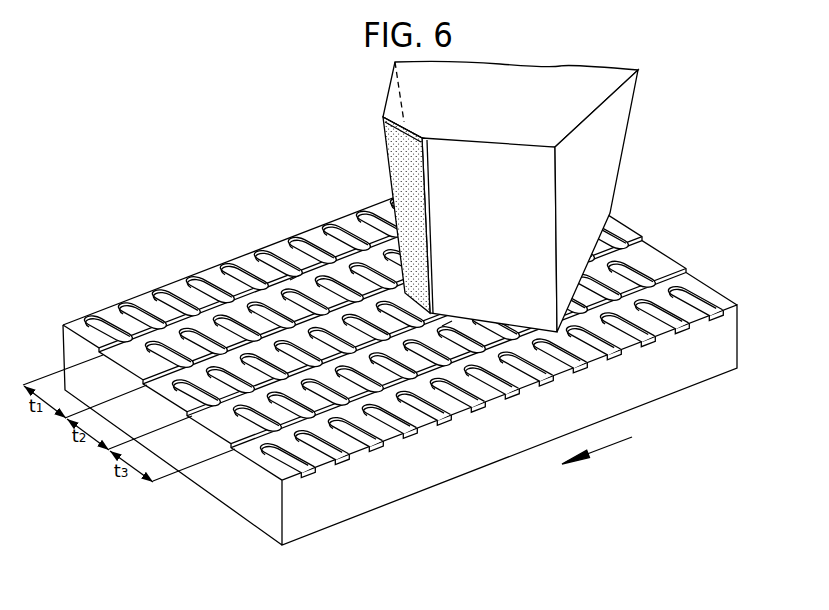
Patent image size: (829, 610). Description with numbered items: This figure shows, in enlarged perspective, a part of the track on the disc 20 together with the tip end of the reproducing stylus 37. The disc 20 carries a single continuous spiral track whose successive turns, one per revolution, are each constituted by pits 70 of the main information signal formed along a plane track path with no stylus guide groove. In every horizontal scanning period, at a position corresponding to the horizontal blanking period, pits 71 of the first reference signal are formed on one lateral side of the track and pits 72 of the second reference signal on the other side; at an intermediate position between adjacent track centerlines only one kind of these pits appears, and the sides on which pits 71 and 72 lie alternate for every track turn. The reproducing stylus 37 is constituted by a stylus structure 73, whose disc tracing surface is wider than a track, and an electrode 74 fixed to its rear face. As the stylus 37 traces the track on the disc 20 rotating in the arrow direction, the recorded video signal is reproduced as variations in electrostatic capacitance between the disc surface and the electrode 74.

The disc 20 is at (146, 286).
The pits of main information signal 70 is at (233, 267).
The pits of first reference signal 71 is at (295, 277).
The pits of second reference signal 72 is at (163, 384).
The stylus structure 73 is at (506, 196).
The electrode 74 is at (392, 157).
The reproducing stylus 37 is at (383, 111).